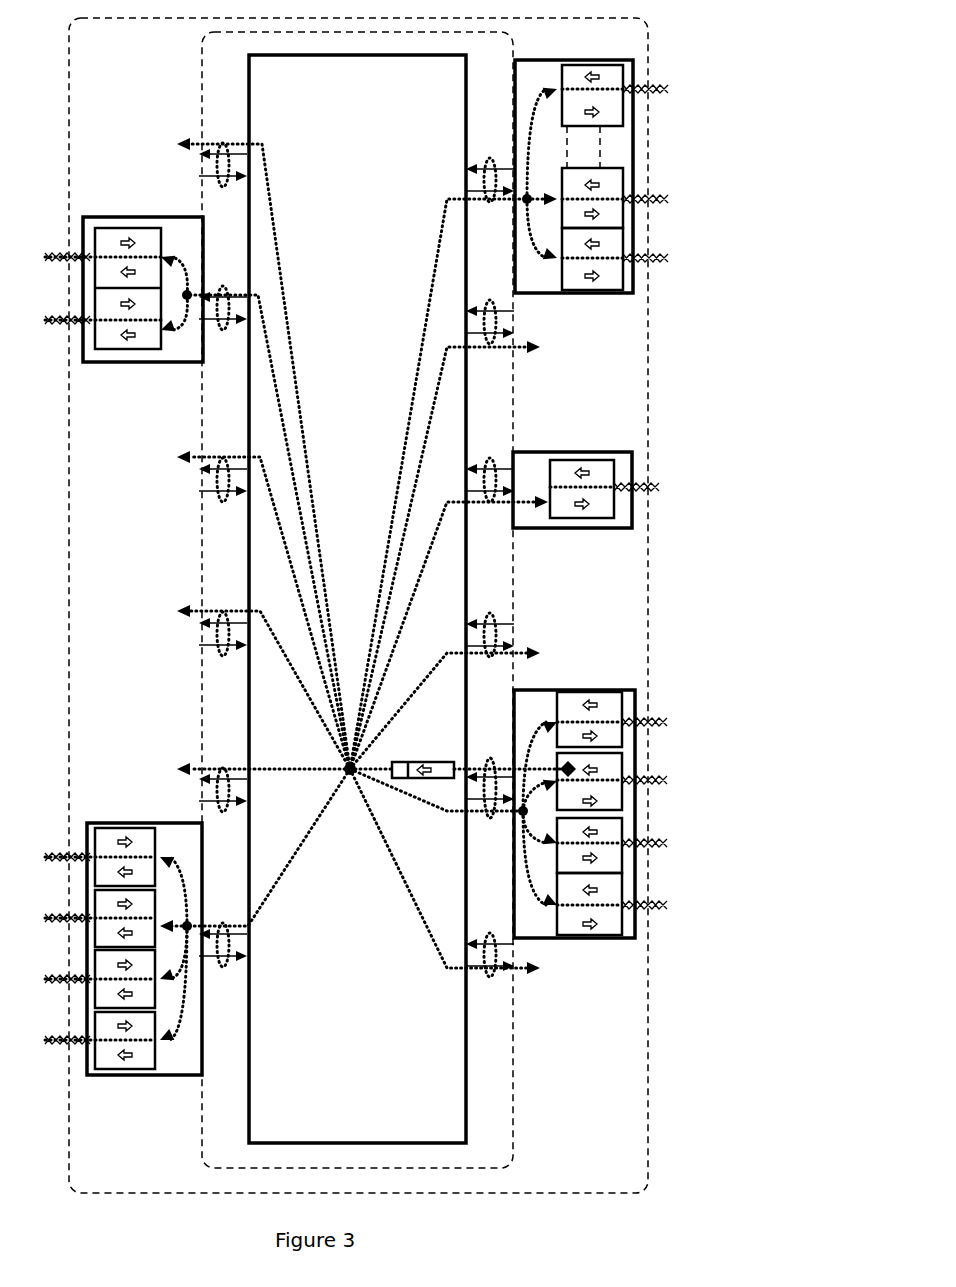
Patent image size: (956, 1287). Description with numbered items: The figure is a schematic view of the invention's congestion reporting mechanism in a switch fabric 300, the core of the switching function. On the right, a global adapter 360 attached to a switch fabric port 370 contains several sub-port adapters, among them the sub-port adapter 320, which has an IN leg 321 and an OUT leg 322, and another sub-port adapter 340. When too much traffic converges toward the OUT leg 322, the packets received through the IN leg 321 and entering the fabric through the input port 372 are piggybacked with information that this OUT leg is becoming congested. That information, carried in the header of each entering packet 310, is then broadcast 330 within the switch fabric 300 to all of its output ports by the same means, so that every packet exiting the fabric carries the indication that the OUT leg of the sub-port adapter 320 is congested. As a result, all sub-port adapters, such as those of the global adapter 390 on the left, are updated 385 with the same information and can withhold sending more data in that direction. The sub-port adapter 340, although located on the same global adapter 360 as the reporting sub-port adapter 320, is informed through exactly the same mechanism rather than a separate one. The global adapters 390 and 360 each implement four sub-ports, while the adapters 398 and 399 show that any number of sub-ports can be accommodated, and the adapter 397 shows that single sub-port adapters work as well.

The switch fabric 300 is at (472, 1034).
The entering packet 310 is at (430, 786).
The sub-port adapter 320 is at (656, 759).
The IN leg 321 is at (604, 763).
The OUT leg 322 is at (608, 802).
The broadcast 330 is at (335, 757).
The sub-port adapter 340 is at (630, 926).
The global adapter 360 is at (585, 684).
The switch fabric port 370 is at (492, 830).
The input port 372 is at (503, 760).
The update 385 is at (190, 1012).
The global adapter 390 is at (158, 817).
The single sub-port adapter 397 is at (585, 444).
The global adapter 398 is at (175, 368).
The global adapter 399 is at (585, 300).